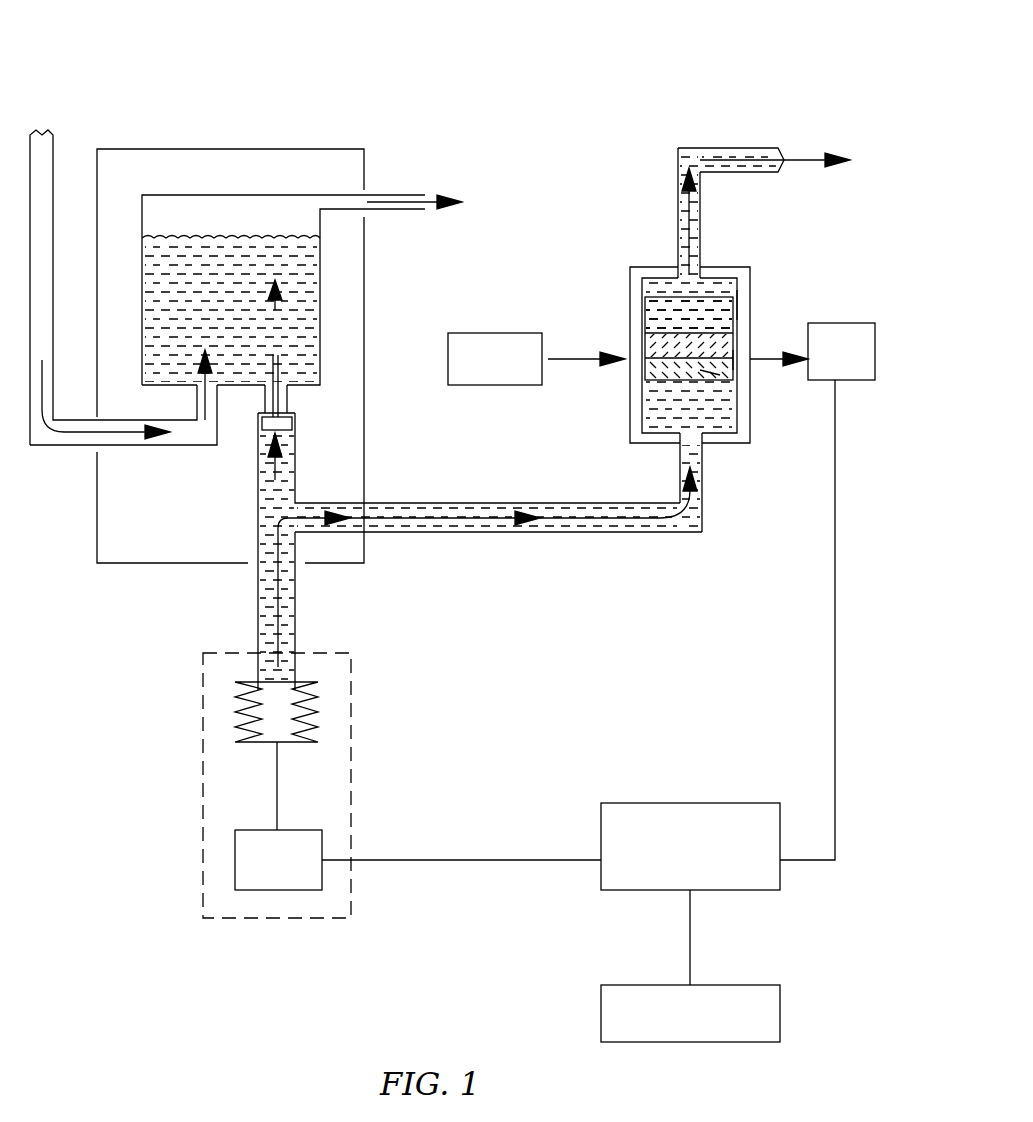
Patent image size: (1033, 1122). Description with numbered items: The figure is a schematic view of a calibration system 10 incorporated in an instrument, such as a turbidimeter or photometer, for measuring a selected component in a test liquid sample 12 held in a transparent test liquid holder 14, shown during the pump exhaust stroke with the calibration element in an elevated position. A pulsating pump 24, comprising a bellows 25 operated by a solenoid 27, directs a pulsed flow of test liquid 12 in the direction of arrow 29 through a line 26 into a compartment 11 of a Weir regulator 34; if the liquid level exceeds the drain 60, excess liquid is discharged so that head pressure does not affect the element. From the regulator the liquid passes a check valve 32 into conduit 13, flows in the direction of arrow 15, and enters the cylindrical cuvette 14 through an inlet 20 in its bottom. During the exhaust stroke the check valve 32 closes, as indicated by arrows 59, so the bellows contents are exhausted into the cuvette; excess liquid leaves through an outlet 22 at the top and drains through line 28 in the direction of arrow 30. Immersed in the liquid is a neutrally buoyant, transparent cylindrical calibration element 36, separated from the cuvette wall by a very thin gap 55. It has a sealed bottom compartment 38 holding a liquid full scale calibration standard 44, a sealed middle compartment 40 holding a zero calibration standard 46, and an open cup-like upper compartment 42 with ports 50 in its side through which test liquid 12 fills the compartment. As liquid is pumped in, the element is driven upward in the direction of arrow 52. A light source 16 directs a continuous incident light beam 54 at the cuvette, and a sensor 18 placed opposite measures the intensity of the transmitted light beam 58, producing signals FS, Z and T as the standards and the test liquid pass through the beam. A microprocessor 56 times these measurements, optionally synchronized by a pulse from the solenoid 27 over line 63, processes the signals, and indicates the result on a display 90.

The calibration system 10 is at (182, 105).
The compartment 11 is at (157, 227).
The test liquid sample 12 is at (305, 320).
The conduit 13 is at (555, 533).
The test liquid holder 14 is at (750, 423).
The arrow 15 is at (315, 517).
The light source 16 is at (492, 385).
The sensor 18 is at (857, 323).
The inlet 20 is at (698, 448).
The outlet 22 is at (702, 275).
The pulsating pump 24 is at (202, 817).
The bellows 25 is at (310, 712).
The line 26 is at (88, 447).
The solenoid 27 is at (273, 890).
The line 28 is at (707, 148).
The arrow 29 is at (73, 432).
The arrow 30 is at (805, 158).
The check valve 32 is at (272, 367).
The Weir regulator 34 is at (272, 150).
The calibration element 36 is at (738, 332).
The sealed bottom compartment 38 is at (643, 370).
The sealed middle compartment 40 is at (643, 333).
The open upper compartment 42 is at (737, 303).
The full scale calibration standard 44 is at (705, 375).
The zero calibration standard 46 is at (663, 352).
The ports 50 is at (642, 315).
The arrow 52 is at (678, 233).
The incident light beam 54 is at (565, 357).
The gap 55 is at (737, 362).
The microprocessor 56 is at (780, 880).
The transmitted light beam 58 is at (765, 359).
The arrows 59 is at (275, 315).
The drain 60 is at (400, 196).
The line 63 is at (413, 860).
The display 90 is at (780, 1013).